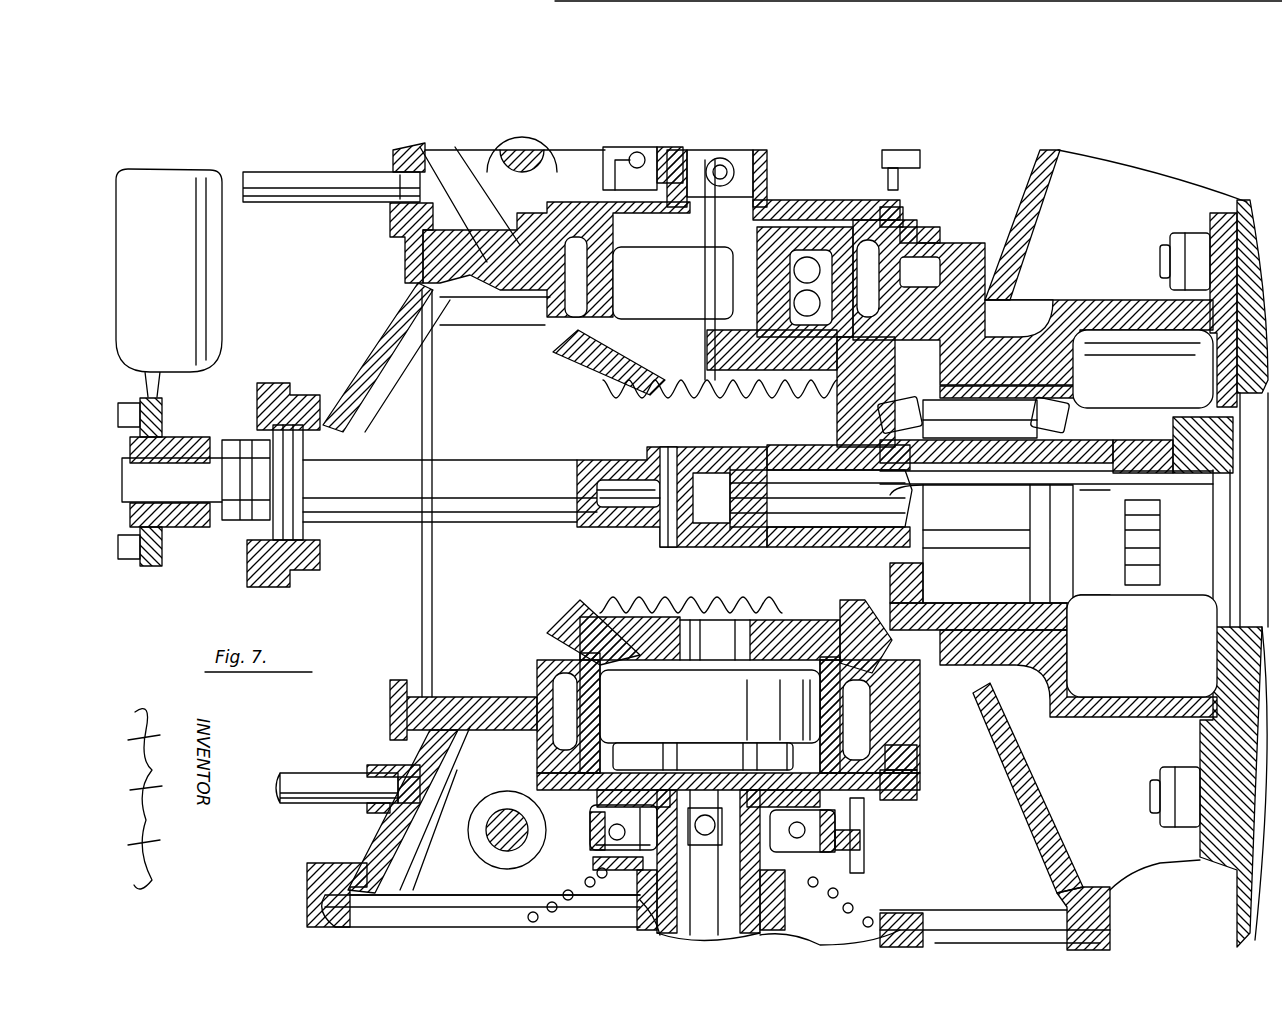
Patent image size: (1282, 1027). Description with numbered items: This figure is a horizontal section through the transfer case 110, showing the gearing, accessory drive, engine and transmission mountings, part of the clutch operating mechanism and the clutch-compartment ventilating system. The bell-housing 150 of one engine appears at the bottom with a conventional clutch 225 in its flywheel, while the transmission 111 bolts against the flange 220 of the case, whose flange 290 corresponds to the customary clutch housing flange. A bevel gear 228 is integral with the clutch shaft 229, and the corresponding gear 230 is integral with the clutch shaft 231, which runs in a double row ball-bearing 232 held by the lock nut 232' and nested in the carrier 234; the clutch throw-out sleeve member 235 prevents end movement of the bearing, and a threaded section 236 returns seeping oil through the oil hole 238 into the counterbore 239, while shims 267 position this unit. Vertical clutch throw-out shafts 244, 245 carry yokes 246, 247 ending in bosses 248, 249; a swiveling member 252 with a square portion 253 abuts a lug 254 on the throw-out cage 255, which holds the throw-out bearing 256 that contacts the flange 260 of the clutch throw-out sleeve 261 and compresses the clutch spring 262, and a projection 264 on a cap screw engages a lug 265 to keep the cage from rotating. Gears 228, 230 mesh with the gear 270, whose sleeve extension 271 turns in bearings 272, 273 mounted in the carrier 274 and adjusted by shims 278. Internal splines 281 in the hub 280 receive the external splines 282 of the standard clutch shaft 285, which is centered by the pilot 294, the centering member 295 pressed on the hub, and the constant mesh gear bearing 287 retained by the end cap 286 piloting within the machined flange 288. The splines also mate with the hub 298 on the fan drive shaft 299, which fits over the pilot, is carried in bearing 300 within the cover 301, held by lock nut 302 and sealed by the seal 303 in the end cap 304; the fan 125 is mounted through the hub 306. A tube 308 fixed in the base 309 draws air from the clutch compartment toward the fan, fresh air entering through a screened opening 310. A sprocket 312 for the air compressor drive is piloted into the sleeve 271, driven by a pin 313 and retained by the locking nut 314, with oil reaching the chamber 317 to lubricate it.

The transfer case 110 is at (1010, 770).
The transmission 111 is at (1240, 905).
The fan 125 is at (222, 300).
The bell-housing 150 is at (307, 893).
The flange 220 is at (1218, 862).
The clutch 225 is at (905, 905).
The bevel gear 228 is at (570, 620).
The clutch shaft 229 is at (708, 908).
The gear 230 is at (570, 372).
The clutch shaft 231 is at (695, 175).
The double row ball-bearing 232 is at (691, 551).
The lock nut 232' is at (931, 231).
The bearing carrier 234 is at (545, 322).
The clutch throw-out sleeve member 235 is at (905, 215).
The threaded section 236 is at (900, 165).
The oil hole 238 is at (805, 340).
The counterbore 239 is at (690, 398).
The clutch throw-out shaft 244 is at (470, 838).
The clutch throw-out shaft 245 is at (520, 192).
The yoke 246 is at (590, 850).
The yoke 247 is at (545, 210).
The boss 248 is at (685, 805).
The boss 249 is at (738, 186).
The swiveling member 252 is at (708, 865).
The square portion 253 is at (705, 815).
The lug 254 is at (690, 840).
The throw-out cage 255 is at (615, 800).
The antifriction throw-out bearing 256 is at (820, 826).
The flange 260 is at (575, 882).
The clutch throw-out sleeve 261 is at (840, 905).
The clutch spring 262 is at (515, 915).
The projection 264 is at (865, 865).
The lug 265 is at (865, 846).
The shims 267 is at (935, 270).
The gear 270 is at (835, 585).
The sleeve extension 271 is at (975, 555).
The anti-friction bearing 272 is at (925, 415).
The anti-friction bearing 273 is at (1033, 415).
The carrier 274 is at (1067, 620).
The shims 278 is at (960, 345).
The hub 280 is at (890, 472).
The internal splines 281 is at (828, 590).
The external splines 282 is at (805, 470).
The clutch shaft 285 is at (1165, 408).
The end cap 286 is at (1225, 350).
The constant mesh gear bearing 287 is at (1240, 613).
The machined flange 288 is at (1195, 728).
The flange 290 is at (1085, 880).
The pilot 294 is at (708, 515).
The centering member 295 is at (770, 545).
The hub 298 is at (700, 447).
The fan drive shaft 299 is at (552, 510).
The anti-friction bearing 300 is at (305, 432).
The transfer case cover 301 is at (352, 356).
The lock nut 302 is at (238, 540).
The seal 303 is at (225, 440).
The end cap 304 is at (245, 440).
The hub 306 is at (178, 528).
The tube 308 is at (330, 203).
The base 309 is at (400, 230).
The screened opening 310 is at (1043, 205).
The sprocket 312 is at (1138, 578).
The pin 313 is at (1087, 430).
The locking nut 314 is at (1128, 420).
The chamber 317 is at (1112, 335).